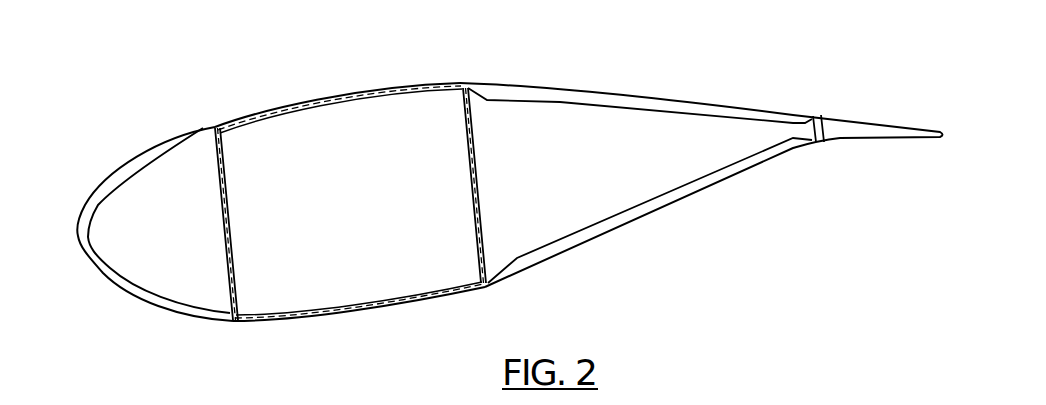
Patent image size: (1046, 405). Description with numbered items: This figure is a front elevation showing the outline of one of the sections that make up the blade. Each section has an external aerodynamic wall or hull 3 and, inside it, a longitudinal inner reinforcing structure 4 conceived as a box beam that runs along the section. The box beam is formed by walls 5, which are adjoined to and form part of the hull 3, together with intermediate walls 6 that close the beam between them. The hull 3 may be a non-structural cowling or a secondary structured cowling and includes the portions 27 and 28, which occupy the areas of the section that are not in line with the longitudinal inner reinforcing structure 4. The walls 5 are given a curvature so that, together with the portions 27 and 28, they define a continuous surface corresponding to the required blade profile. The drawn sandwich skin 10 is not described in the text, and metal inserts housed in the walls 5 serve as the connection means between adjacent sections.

The external aerodynamic wall or hull 3 is at (509, 169).
The longitudinal inner reinforcing structure 4 is at (397, 204).
The walls 5 is at (322, 99).
The intermediate walls 6 is at (228, 232).
The sandwich skin 10 is at (350, 175).
The portion of the hull 27 is at (648, 200).
The portion of the hull 28 is at (163, 296).